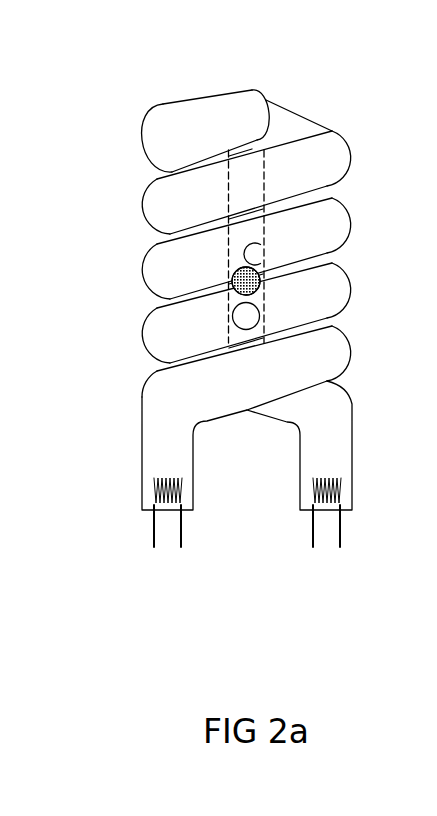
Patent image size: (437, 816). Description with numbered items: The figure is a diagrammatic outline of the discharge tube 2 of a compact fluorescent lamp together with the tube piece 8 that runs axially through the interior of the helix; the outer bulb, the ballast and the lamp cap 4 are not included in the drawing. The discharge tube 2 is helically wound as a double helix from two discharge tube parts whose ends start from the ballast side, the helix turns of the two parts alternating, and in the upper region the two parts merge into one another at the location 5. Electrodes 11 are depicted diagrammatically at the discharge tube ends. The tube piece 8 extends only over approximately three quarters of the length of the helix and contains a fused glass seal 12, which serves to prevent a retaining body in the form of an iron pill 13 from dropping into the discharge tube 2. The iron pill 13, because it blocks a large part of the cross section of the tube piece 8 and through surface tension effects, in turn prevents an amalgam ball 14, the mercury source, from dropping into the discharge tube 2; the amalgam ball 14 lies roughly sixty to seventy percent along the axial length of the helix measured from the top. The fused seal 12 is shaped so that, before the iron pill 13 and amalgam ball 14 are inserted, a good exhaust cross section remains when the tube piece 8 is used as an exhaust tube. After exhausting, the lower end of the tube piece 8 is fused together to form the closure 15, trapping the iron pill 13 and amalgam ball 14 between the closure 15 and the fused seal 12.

The discharge tube 2 is at (142, 343).
The lamp cap 4 is at (177, 514).
The merging location 5 is at (247, 90).
The tube piece 8 is at (160, 213).
The electrodes 11 is at (313, 528).
The fused glass seal 12 is at (262, 256).
The iron pill 13 is at (260, 282).
The amalgam ball 14 is at (248, 316).
The closure 15 is at (232, 337).